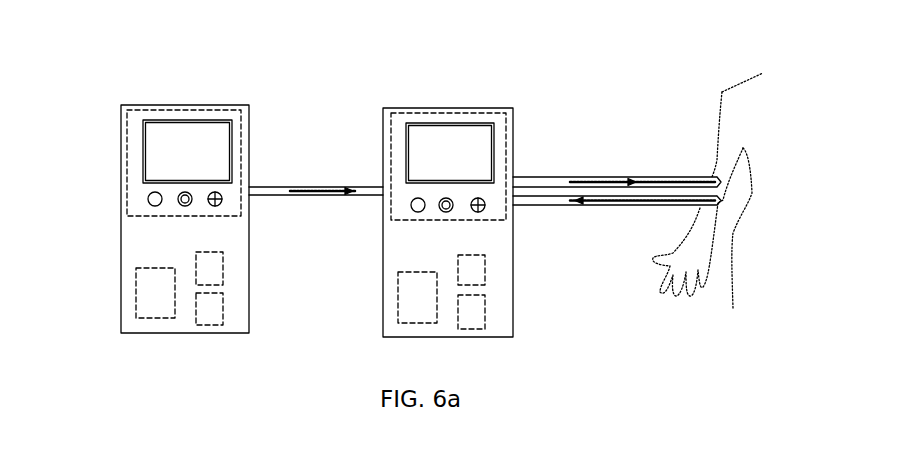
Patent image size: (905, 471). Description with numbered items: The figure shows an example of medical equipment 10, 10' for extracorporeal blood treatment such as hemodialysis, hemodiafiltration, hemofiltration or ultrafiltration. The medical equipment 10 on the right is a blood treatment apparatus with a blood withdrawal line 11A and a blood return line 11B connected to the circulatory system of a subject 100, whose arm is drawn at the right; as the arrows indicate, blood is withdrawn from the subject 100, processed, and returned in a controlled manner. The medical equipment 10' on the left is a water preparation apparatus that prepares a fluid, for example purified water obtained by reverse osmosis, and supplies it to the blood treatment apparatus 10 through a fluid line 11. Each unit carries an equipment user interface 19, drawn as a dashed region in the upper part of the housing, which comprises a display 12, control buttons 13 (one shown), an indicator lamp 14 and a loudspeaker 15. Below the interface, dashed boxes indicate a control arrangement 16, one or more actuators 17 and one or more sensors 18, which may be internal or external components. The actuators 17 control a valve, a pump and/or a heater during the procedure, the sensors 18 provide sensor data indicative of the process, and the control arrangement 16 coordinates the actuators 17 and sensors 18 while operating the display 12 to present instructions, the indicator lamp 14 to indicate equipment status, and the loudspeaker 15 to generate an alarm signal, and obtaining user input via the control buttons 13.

The medical equipment 10 is at (464, 182).
The medical equipment 10' is at (202, 175).
The fluid line 11 is at (275, 187).
The blood withdrawal line 11A is at (545, 177).
The blood return line 11B is at (652, 206).
The display 12 is at (200, 164).
The control buttons 13 is at (149, 198).
The indicator lamp 14 is at (185, 206).
The loudspeaker 15 is at (215, 206).
The control arrangement 16 is at (136, 297).
The actuators 17 is at (223, 265).
The sensors 18 is at (223, 315).
The equipment user interface 19 is at (130, 137).
The subject 100 is at (735, 105).